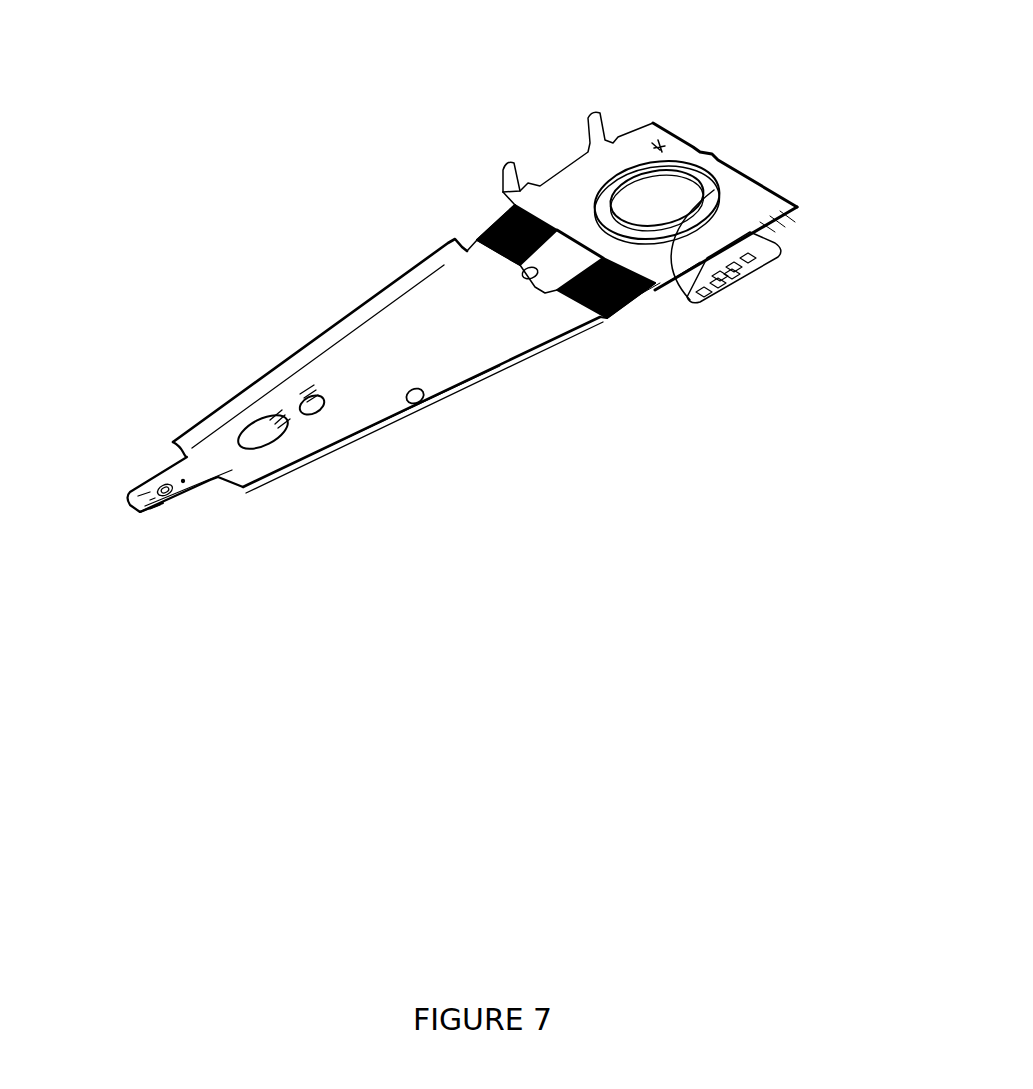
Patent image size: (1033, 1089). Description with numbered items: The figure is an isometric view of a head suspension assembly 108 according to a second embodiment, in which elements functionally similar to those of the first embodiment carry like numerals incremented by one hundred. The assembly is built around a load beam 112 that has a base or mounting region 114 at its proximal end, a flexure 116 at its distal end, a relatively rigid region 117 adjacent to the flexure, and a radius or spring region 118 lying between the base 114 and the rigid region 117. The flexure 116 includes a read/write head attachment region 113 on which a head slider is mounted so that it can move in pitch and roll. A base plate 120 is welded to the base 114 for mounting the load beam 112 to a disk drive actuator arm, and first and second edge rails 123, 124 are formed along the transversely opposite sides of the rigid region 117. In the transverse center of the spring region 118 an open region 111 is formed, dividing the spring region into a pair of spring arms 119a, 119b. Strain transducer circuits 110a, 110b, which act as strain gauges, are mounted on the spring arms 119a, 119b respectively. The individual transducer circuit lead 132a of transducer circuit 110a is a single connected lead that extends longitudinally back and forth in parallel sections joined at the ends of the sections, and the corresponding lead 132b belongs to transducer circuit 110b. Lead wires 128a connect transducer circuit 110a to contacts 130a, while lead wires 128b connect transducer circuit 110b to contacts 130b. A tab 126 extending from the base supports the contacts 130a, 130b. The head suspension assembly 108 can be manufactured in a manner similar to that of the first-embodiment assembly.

The head suspension assembly 108 is at (565, 513).
The strain transducer circuit 110a is at (495, 225).
The strain transducer circuit 110b is at (625, 320).
The open region 111 is at (505, 280).
The load beam 112 is at (283, 148).
The read/write head attachment region 113 is at (130, 512).
The base or mounting region 114 is at (638, 130).
The flexure 116 is at (180, 510).
The rigid region 117 is at (367, 433).
The radius or spring region 118 is at (652, 302).
The spring arm 119a is at (490, 237).
The spring arm 119b is at (643, 315).
The base plate 120 is at (798, 209).
The first edge rail 123 is at (307, 340).
The second edge rail 124 is at (423, 403).
The tab 126 is at (780, 245).
The lead wires 128a is at (522, 282).
The lead wires 128b is at (714, 190).
The contacts 130a is at (712, 285).
The contacts 130b is at (755, 255).
The individual transducer circuit lead 132a is at (510, 205).
The individual transducer circuit lead 132b is at (600, 320).